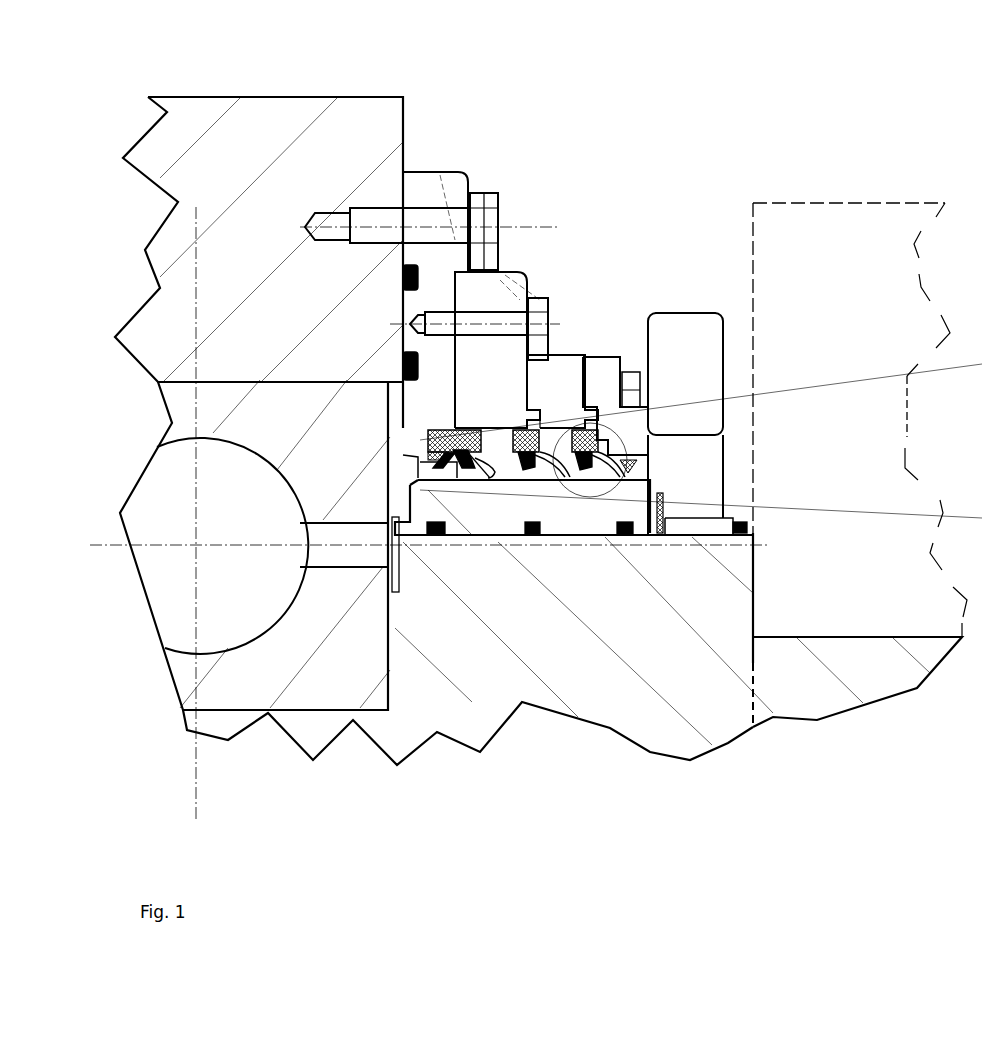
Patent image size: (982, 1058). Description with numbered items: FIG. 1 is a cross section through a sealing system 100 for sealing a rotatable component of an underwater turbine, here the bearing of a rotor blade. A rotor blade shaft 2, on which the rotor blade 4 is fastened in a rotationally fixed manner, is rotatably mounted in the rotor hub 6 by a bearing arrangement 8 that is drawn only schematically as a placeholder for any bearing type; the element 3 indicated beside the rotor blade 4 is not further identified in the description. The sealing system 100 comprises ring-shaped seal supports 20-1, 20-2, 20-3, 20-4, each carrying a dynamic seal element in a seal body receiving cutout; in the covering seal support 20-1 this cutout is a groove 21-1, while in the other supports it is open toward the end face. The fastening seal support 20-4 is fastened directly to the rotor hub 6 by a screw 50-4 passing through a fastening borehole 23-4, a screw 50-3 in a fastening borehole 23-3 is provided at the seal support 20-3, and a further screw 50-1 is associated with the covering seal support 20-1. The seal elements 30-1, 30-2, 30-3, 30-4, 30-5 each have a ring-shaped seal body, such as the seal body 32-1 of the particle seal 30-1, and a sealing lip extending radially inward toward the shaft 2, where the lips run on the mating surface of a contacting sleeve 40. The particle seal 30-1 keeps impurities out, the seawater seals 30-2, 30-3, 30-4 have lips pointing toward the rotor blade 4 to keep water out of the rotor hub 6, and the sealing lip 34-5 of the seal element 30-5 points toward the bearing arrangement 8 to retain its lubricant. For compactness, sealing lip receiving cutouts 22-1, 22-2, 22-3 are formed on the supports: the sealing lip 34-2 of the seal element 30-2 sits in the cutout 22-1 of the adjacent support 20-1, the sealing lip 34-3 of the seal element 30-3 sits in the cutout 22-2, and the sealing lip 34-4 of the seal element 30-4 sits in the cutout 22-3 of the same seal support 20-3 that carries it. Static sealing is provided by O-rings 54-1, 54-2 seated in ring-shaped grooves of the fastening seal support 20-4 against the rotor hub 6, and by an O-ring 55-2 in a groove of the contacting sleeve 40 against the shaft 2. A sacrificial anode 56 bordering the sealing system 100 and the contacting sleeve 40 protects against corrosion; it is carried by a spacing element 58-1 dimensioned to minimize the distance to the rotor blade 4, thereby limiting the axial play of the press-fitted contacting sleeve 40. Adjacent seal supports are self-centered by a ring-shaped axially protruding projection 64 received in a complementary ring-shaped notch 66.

The sealing system 100 is at (556, 62).
The rotor hub 6 is at (185, 122).
The bearing arrangement 8 is at (160, 500).
The rotor blade 4 is at (878, 225).
The component 3 is at (977, 441).
The rotor blade shaft 2 is at (555, 692).
The groove 21-1 is at (662, 533).
The fastening seal support 20-4 is at (420, 185).
The third seal support 20-3 is at (500, 287).
The seal support 20-2 is at (563, 373).
The covering seal support 20-1 is at (608, 367).
The fastening borehole 23-4 is at (450, 200).
The fastening borehole 23-3 is at (533, 297).
The screw 50-4 is at (488, 198).
The screw 50-3 is at (547, 300).
The screw 50-1 is at (697, 333).
The sacrificial anode 56 is at (702, 315).
The O-ring 54-1 is at (403, 275).
The O-ring 54-2 is at (403, 360).
The seal body 32-1 is at (440, 440).
The axially protruding projection 64 is at (527, 422).
The sealing lip receiving cutout 22-3 is at (485, 440).
The ring-shaped notch 66 is at (537, 445).
The sealing lip receiving cutout 22-1 is at (650, 448).
The sealing lip receiving cutout 22-2 is at (555, 470).
The O-ring 55-2 is at (388, 598).
The spacing element 58-1 is at (657, 520).
The sealing lip 34-5 is at (433, 528).
The sealing lip 34-4 is at (483, 535).
The sealing lip 34-3 is at (522, 535).
The sealing lip 34-2 is at (605, 535).
The seal element 30-5 is at (440, 470).
The seawater seal 30-4 is at (478, 478).
The seawater seal 30-3 is at (555, 478).
The seawater seal 30-2 is at (615, 478).
The particle seal 30-1 is at (625, 478).
The contacting sleeve 40 is at (475, 535).